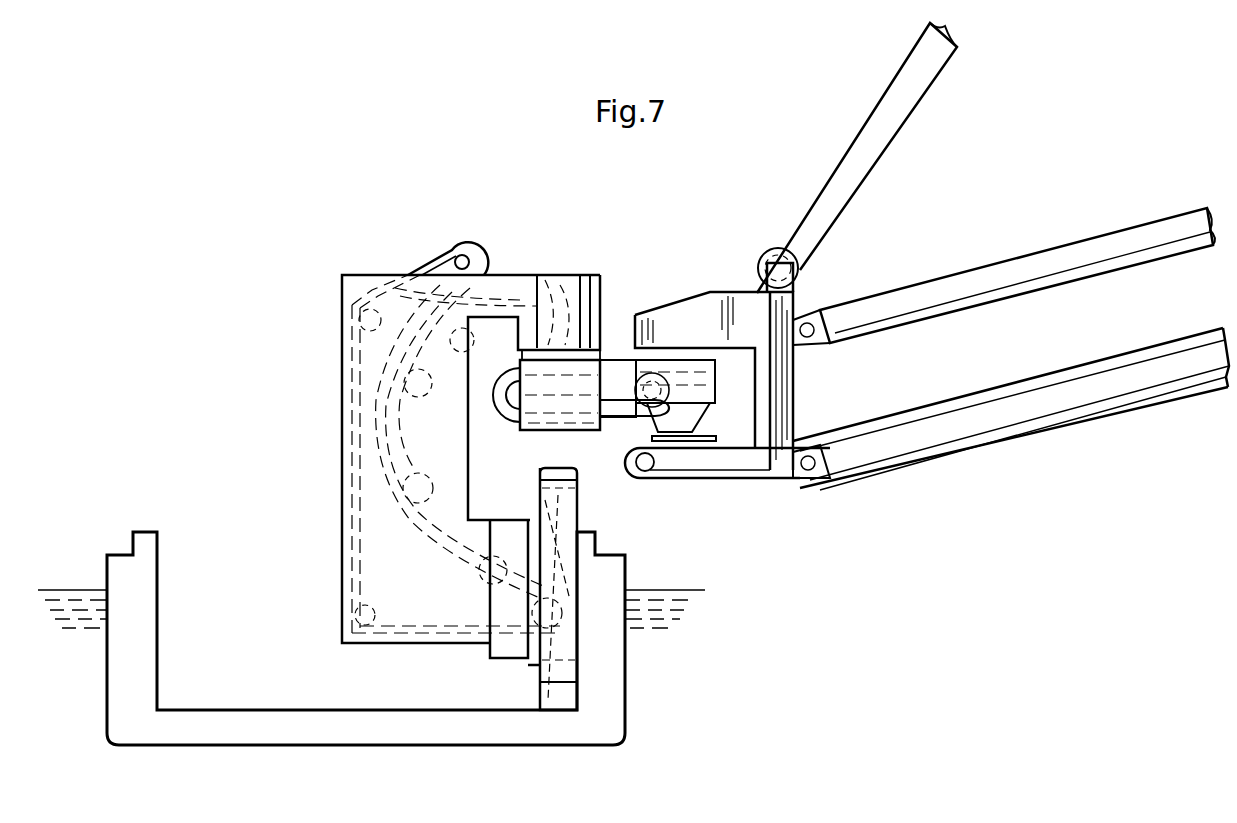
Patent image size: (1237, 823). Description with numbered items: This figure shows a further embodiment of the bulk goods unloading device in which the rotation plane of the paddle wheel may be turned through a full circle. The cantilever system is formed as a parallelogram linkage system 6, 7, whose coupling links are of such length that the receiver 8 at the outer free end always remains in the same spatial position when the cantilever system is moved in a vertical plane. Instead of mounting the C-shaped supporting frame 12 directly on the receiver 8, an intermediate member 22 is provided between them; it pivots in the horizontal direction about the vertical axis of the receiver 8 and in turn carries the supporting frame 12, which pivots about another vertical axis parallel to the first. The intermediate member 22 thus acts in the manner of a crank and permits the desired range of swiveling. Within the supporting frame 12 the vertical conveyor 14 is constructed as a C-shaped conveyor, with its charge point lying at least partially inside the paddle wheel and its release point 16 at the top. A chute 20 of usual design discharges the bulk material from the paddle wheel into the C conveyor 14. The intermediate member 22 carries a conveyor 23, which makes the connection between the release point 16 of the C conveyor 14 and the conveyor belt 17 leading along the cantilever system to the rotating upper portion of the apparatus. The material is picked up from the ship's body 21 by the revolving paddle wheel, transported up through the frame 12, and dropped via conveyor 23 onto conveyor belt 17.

The parallelogram linkage system link 6 is at (1024, 272).
The parallelogram linkage system link 7 is at (1062, 398).
The receiver 8 is at (702, 305).
The C-shaped supporting frame 12 is at (375, 292).
The vertical conveyor 14 is at (350, 438).
The release point 16 is at (548, 300).
The conveyor belt 17 is at (875, 422).
The chute 20 is at (565, 545).
The ship's body 21 is at (600, 663).
The intermediate member 22 is at (613, 348).
The conveyor 23 is at (610, 420).